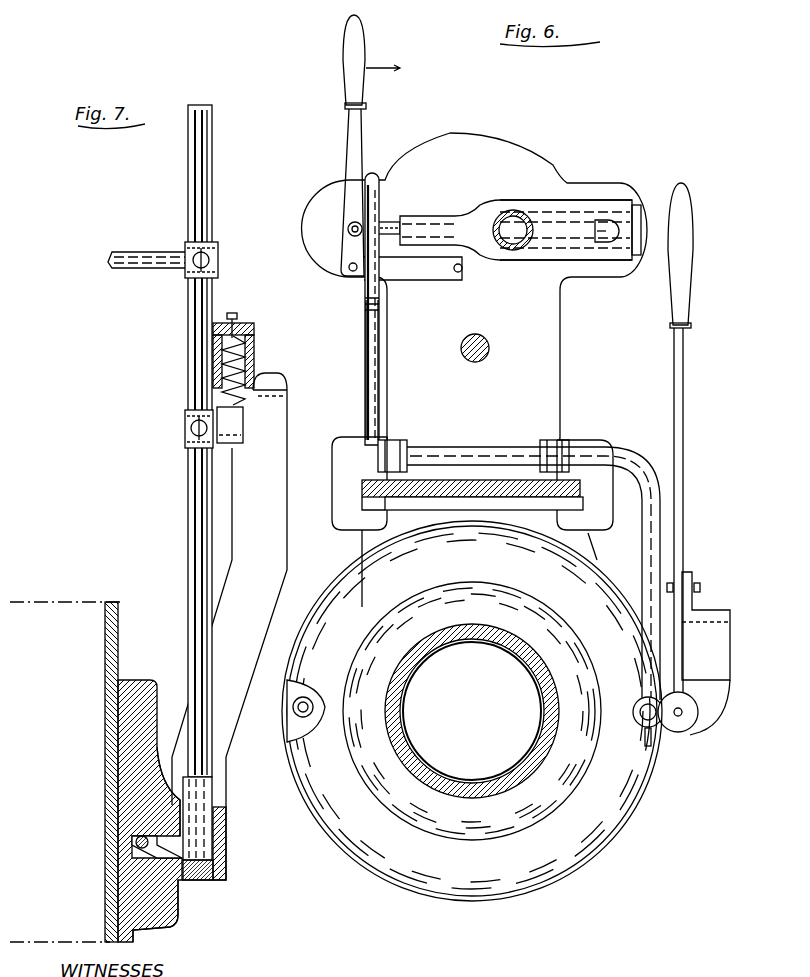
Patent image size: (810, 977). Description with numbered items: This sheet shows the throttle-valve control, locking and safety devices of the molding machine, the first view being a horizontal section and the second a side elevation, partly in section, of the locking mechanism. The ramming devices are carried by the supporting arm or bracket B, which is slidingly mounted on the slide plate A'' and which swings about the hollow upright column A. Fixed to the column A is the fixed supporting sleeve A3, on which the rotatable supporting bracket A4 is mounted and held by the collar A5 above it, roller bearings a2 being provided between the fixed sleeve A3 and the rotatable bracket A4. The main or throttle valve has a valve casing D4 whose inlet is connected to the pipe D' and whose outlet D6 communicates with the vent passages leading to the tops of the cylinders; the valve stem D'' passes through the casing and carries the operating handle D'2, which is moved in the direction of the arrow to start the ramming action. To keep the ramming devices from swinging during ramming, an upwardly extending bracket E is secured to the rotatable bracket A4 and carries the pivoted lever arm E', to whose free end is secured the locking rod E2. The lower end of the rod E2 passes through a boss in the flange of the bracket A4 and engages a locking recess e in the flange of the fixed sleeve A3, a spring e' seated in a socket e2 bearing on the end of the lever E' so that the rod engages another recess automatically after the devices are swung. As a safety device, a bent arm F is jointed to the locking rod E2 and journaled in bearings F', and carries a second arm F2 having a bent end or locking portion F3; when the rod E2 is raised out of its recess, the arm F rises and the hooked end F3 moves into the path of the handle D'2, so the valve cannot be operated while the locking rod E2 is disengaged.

In FIG. 6, the hollow upright column A is at (472, 711).
In FIG. 7, the hollow upright column A is at (128, 772).
In FIG. 6, the slide plate A'' is at (472, 522).
In FIG. 7, the fixed supporting sleeve A3 is at (178, 922).
In FIG. 7, the rotatable supporting bracket A4 is at (145, 805).
In FIG. 7, the collar A5 is at (157, 692).
In FIG. 7, the roller bearings a2 is at (136, 846).
In FIG. 6, the supporting arm or bracket B is at (474, 290).
In FIG. 6, the stud B' is at (485, 337).
In FIG. 6, the pipe D' is at (520, 214).
In FIG. 6, the valve stem D'' is at (405, 230).
In FIG. 6, the operating handle D'2 is at (352, 145).
In FIG. 6, the valve casing D4 is at (567, 200).
In FIG. 6, the outlet D6 is at (573, 228).
In FIG. 6, the upwardly extending bracket E is at (712, 653).
In FIG. 7, the upwardly extending bracket E is at (229, 626).
In FIG. 6, the lever arm E' is at (693, 441).
In FIG. 7, the lever arm E' is at (266, 424).
In FIG. 7, the locking rod E2 is at (207, 183).
In FIG. 7, the locking recess e is at (209, 858).
In FIG. 7, the spring e' is at (248, 364).
In FIG. 6, the socket e2 is at (682, 730).
In FIG. 7, the socket e2 is at (244, 322).
In FIG. 6, the bent arm F is at (559, 559).
In FIG. 7, the bent arm F is at (163, 331).
In FIG. 6, the bearings F' is at (485, 441).
In FIG. 6, the second arm F2 is at (364, 352).
In FIG. 6, the bent end or locking portion F3 is at (376, 178).